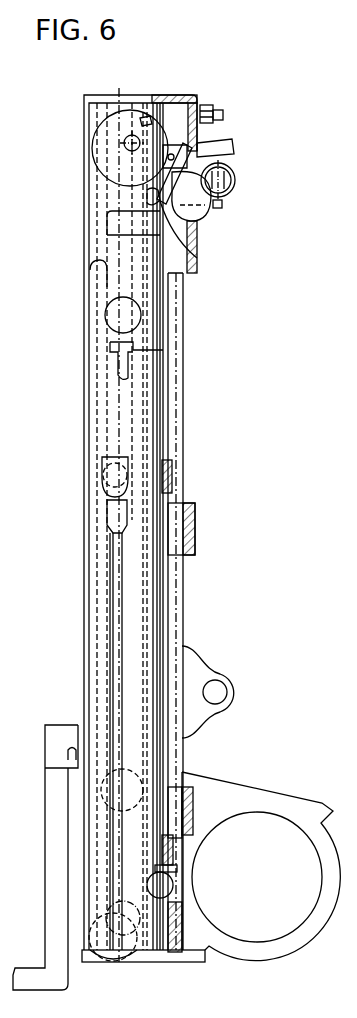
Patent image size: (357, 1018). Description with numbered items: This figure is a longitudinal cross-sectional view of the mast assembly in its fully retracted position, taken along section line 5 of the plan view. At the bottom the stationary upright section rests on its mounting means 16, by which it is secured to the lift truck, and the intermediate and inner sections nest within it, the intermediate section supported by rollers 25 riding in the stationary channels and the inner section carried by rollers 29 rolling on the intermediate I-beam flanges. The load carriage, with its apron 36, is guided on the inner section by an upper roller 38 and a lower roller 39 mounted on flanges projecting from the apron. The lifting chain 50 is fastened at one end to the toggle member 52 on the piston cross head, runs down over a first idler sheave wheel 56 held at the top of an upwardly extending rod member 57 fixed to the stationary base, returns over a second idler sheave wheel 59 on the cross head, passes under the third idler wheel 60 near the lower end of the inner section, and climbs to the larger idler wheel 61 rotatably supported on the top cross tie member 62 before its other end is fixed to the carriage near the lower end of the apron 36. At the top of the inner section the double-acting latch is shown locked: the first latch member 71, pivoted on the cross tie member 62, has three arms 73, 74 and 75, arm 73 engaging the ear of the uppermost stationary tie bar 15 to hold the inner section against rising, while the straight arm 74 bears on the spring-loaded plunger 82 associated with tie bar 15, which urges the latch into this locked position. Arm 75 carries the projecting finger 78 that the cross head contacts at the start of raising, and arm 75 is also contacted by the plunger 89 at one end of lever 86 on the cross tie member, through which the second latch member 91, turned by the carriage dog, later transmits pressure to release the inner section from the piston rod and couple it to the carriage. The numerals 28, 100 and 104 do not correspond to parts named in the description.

The upper roller 38 is at (115, 93).
The guide line 28 is at (142, 97).
The top cross tie member 62 is at (170, 82).
The link 104 is at (97, 124).
The arm 75 is at (167, 112).
The plunger 89 is at (189, 104).
The lever 86 is at (214, 116).
The finger portion 78 is at (140, 120).
The larger idler wheel 61 is at (93, 147).
The arm 100 is at (145, 166).
The arm 74 is at (230, 146).
The spring-loaded plunger 82 is at (234, 171).
The cross brace member 15 is at (236, 183).
The arm 73 is at (222, 204).
The first latch member 71 is at (211, 216).
The latch member 91 is at (198, 255).
The second idler sheave wheel 59 is at (110, 313).
The toggle member 52 is at (123, 375).
The flexible link chain 50 is at (178, 436).
The first idler sheave wheel 56 is at (100, 480).
The rod member 57 is at (115, 645).
The section line 5 is at (76, 610).
The apron 36 is at (72, 818).
The third idler wheel 60 is at (167, 887).
The mounting means 16 is at (287, 947).
The roller 29 is at (173, 957).
The roller 25 is at (143, 953).
The lower roller 39 is at (117, 967).